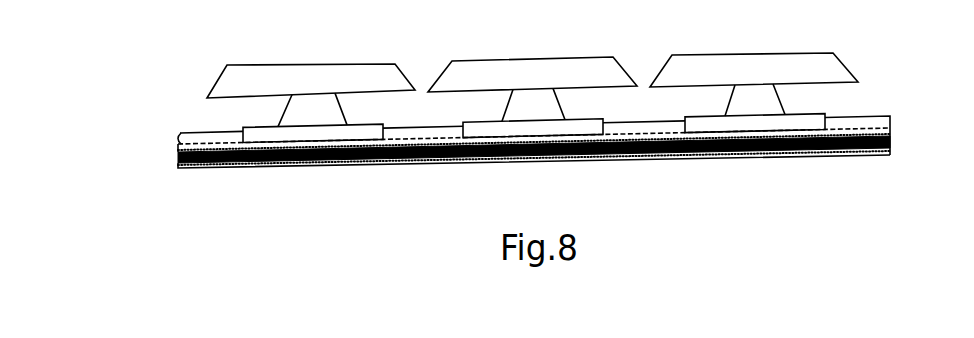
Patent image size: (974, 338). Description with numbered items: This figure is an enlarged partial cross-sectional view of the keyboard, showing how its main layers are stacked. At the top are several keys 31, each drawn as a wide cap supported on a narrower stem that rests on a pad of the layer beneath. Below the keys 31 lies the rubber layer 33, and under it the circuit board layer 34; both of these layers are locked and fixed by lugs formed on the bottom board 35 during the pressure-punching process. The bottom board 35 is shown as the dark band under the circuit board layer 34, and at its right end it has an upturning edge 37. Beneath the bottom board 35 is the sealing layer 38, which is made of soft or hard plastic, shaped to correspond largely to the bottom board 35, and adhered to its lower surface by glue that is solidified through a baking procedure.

The key 31 is at (362, 68).
The rubber layer 33 is at (178, 131).
The circuit board layer 34 is at (178, 148).
The bottom board 35 is at (178, 160).
The upturning edge 37 is at (872, 121).
The sealing layer 38 is at (263, 169).